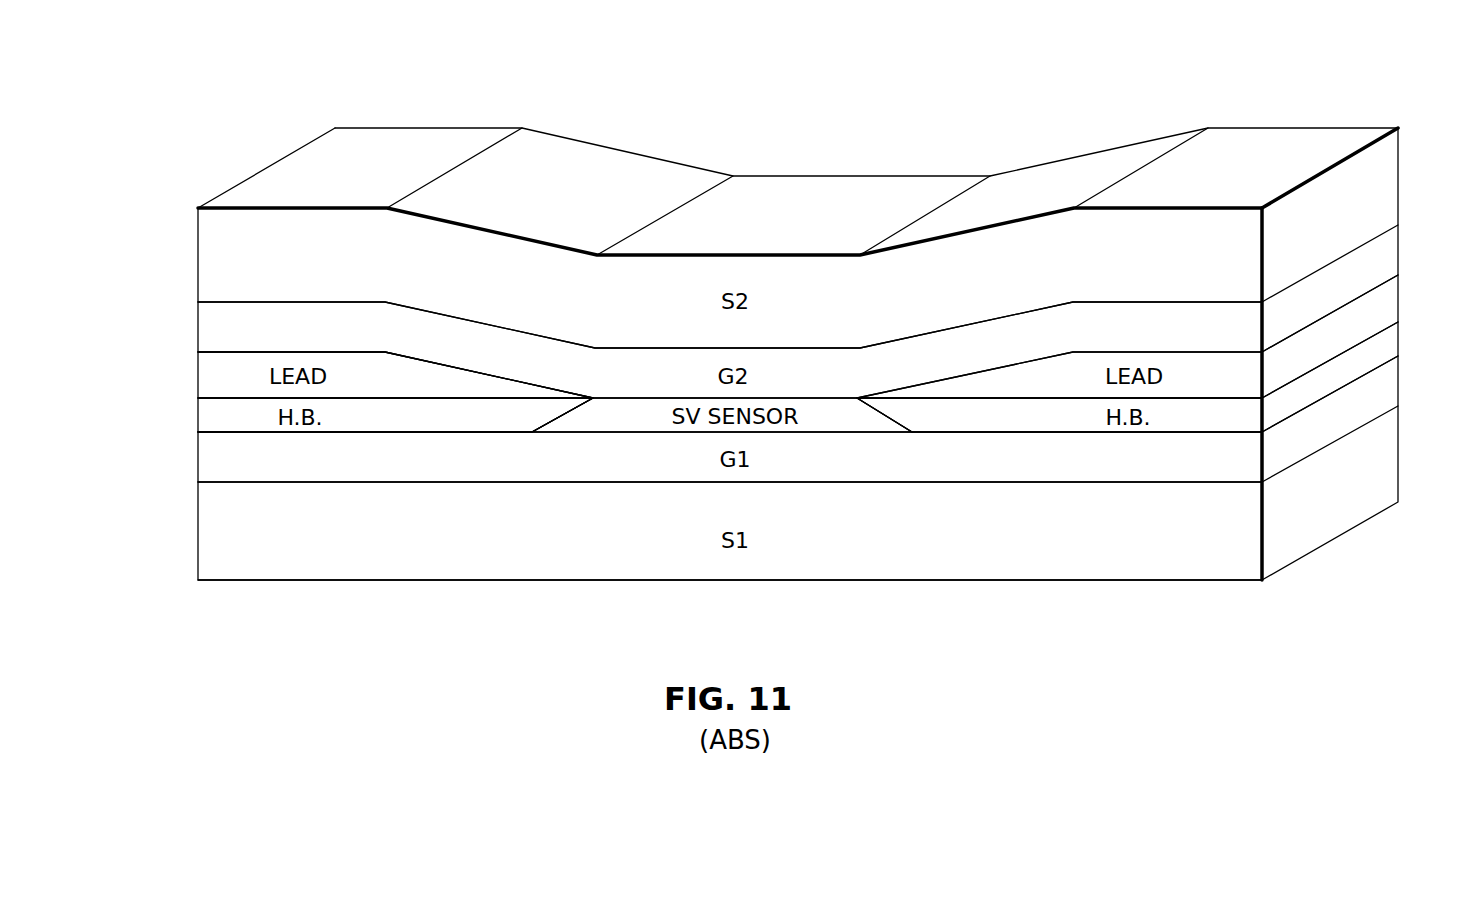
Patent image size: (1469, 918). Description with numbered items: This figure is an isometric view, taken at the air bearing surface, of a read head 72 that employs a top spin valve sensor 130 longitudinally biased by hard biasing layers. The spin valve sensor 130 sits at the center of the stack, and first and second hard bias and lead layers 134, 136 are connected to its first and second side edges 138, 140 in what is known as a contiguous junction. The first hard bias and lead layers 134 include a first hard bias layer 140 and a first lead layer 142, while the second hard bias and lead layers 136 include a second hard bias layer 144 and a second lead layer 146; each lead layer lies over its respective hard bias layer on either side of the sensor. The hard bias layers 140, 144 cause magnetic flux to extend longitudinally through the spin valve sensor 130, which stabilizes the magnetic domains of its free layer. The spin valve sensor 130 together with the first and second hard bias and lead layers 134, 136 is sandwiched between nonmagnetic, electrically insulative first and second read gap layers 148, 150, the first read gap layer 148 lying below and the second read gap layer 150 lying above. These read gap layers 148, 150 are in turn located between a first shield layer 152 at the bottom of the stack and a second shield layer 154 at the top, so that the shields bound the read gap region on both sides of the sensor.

The read head 72 is at (860, 145).
The top spin valve sensor 130 is at (630, 398).
The first hard bias and lead layers 134 is at (190, 353).
The second hard bias and lead layers 136 is at (1407, 272).
The first side edge 138 is at (550, 423).
The first hard bias layer 140 is at (230, 415).
The first lead layer 142 is at (230, 372).
The second hard bias layer 144 is at (1197, 413).
The second lead layer 146 is at (1200, 372).
The first read gap layer 148 is at (510, 462).
The second read gap layer 150 is at (490, 325).
The first shield layer 152 is at (315, 553).
The second shield layer 154 is at (630, 172).